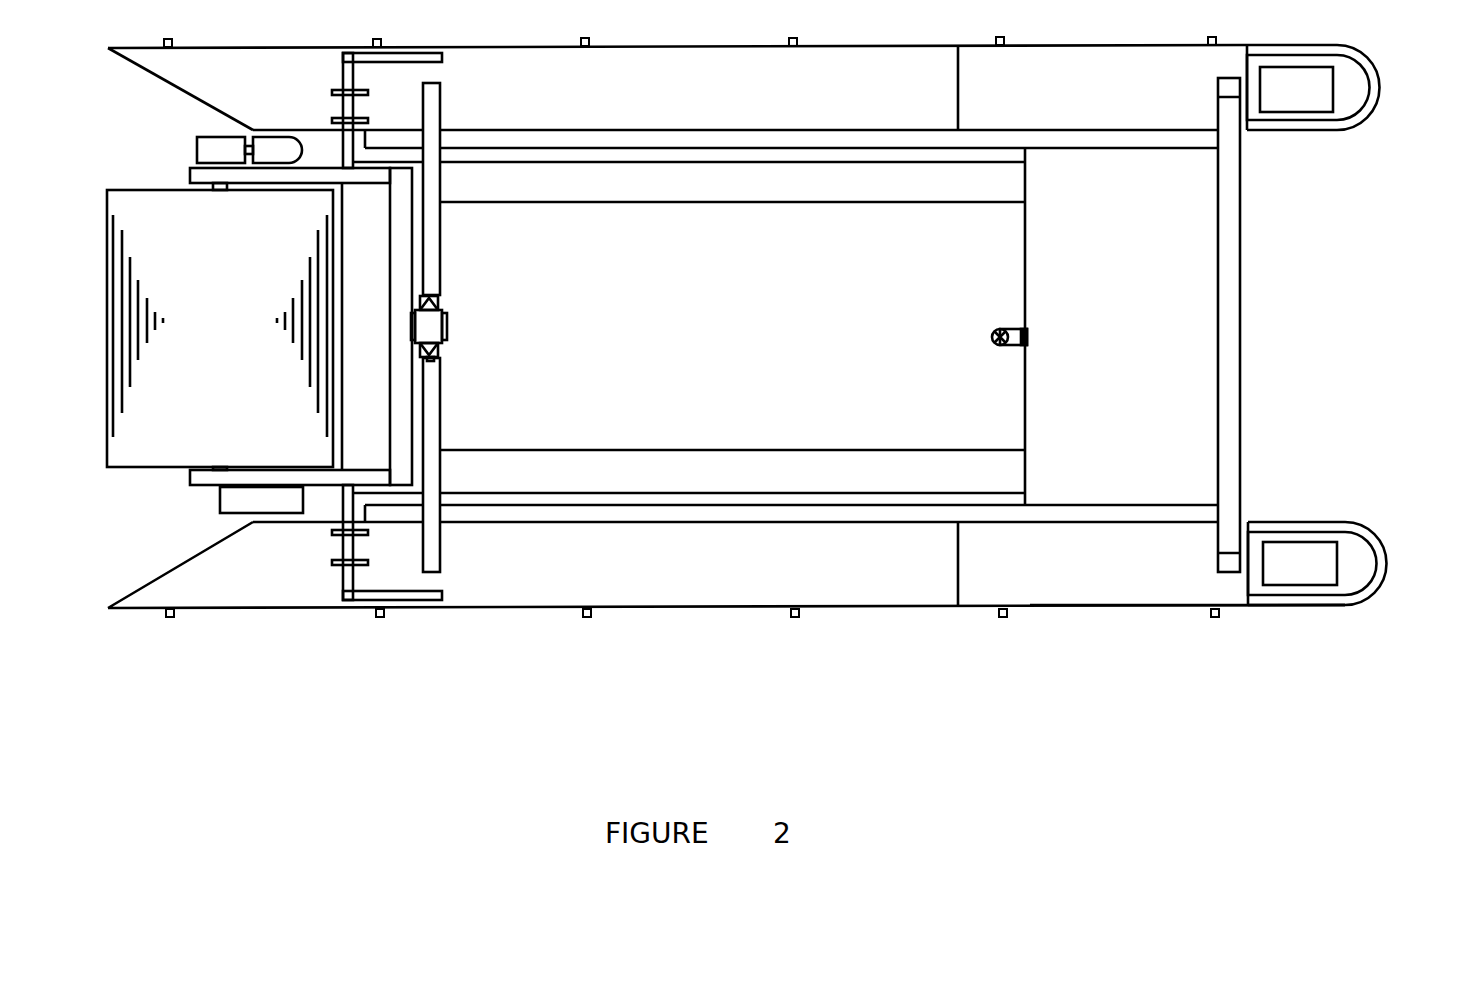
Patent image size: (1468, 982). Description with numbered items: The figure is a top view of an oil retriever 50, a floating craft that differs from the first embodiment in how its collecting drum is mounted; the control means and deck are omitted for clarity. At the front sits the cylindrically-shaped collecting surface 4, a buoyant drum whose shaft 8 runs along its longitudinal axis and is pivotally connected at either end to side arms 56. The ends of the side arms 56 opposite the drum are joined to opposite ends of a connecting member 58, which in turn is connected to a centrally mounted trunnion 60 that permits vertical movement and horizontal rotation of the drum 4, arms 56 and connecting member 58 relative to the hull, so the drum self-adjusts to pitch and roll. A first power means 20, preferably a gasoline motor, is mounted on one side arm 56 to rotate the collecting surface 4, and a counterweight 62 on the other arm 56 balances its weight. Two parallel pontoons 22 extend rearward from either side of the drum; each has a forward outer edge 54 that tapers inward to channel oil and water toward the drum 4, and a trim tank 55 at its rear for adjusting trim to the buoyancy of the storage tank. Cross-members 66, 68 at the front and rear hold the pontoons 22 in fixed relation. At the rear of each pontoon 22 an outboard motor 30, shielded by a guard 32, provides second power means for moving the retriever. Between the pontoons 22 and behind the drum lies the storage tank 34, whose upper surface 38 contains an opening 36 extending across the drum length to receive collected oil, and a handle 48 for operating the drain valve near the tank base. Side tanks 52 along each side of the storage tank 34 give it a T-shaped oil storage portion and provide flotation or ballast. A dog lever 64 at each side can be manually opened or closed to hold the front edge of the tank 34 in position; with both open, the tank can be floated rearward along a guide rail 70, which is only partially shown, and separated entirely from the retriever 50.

The collecting surface 4 is at (160, 195).
The shaft 8 is at (223, 185).
The first power means 20 is at (208, 143).
The pontoon 22 is at (615, 595).
The outboard motor 30 is at (1285, 555).
The guard 32 is at (1373, 108).
The storage tank 34 is at (1010, 275).
The opening 36 is at (375, 433).
The upper surface 38 is at (970, 380).
The handle 48 is at (1007, 332).
The oil retriever 50 is at (1352, 248).
The side tank 52 is at (1000, 180).
The forward outer edge 54 is at (108, 50).
The trim tank 55 is at (1168, 593).
The side arm 56 is at (337, 481).
The connecting member 58 is at (400, 440).
The trunnion 60 is at (433, 323).
The counterweight 62 is at (233, 497).
The dog lever 64 is at (358, 600).
The cross-member 66 is at (428, 253).
The cross-member 68 is at (1232, 195).
The guide rail 70 is at (1217, 617).